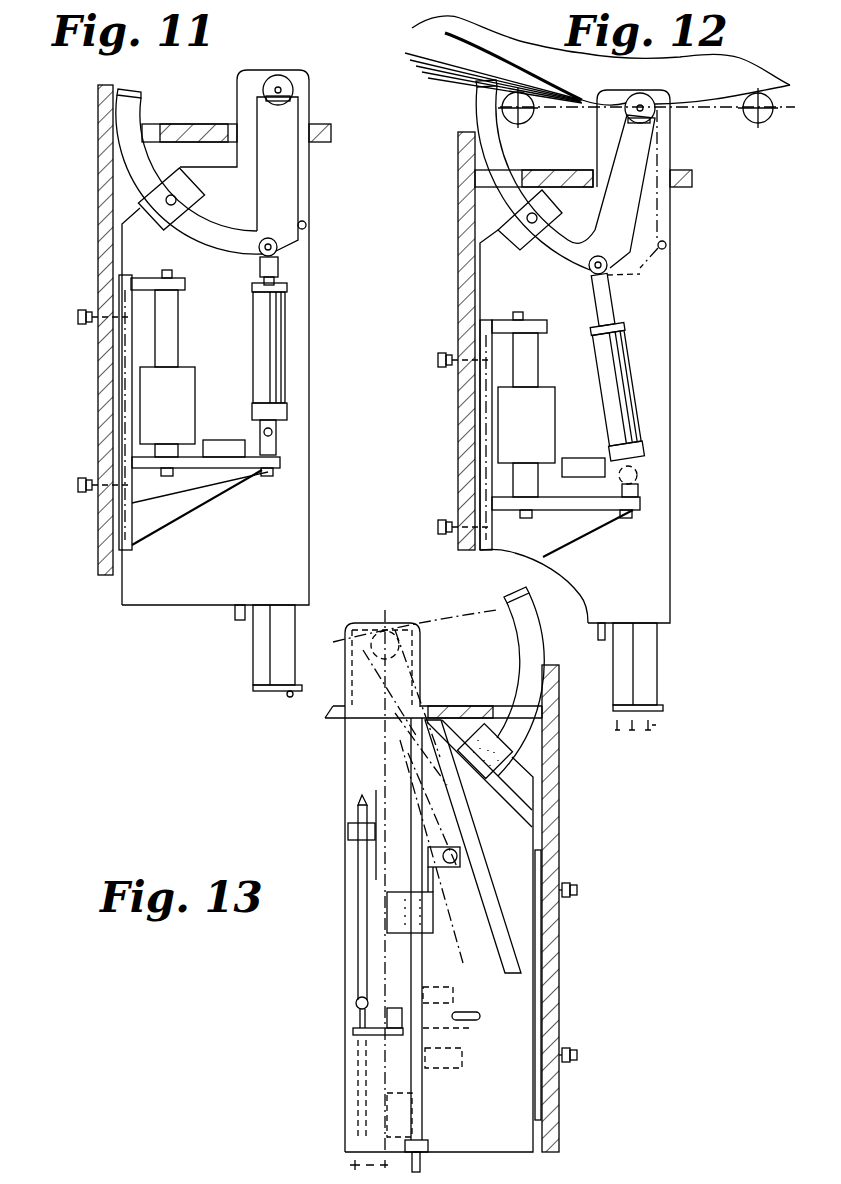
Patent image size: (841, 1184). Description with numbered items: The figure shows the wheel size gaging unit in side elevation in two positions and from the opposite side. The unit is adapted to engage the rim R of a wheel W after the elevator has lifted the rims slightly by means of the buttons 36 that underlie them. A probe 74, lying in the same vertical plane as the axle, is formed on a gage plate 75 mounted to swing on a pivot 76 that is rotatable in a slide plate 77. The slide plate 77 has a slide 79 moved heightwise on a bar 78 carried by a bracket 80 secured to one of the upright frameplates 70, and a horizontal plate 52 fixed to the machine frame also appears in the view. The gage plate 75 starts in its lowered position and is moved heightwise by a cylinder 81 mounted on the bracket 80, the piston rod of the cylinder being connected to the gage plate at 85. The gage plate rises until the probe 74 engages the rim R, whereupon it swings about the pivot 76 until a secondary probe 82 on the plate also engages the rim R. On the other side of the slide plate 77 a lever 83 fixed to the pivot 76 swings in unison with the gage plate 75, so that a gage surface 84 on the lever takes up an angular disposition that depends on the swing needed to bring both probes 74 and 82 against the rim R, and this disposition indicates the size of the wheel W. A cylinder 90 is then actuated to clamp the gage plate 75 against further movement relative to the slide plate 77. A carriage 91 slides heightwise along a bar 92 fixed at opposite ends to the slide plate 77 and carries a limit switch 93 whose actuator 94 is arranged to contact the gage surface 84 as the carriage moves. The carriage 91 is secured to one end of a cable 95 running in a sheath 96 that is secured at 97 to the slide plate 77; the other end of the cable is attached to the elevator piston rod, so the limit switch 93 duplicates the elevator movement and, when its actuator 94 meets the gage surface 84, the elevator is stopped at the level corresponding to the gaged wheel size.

In FIG. 12, the buttons 36 is at (533, 118).
In FIG. 11, the horizontal plate 52 is at (322, 125).
In FIG. 12, the horizontal plate 52 is at (690, 190).
In FIG. 13, the horizontal plate 52 is at (333, 719).
In FIG. 11, the upright frameplate 70 is at (108, 580).
In FIG. 12, the upright frameplate 70 is at (457, 190).
In FIG. 13, the upright frameplate 70 is at (559, 983).
In FIG. 11, the probe 74 is at (280, 96).
In FIG. 12, the probe 74 is at (639, 100).
In FIG. 13, the probe 74 is at (390, 624).
In FIG. 11, the gage plate 75 is at (287, 160).
In FIG. 12, the gage plate 75 is at (645, 152).
In FIG. 13, the gage plate 75 is at (520, 642).
In FIG. 11, the pivot 76 is at (266, 80).
In FIG. 12, the pivot 76 is at (651, 95).
In FIG. 11, the slide plate 77 is at (310, 283).
In FIG. 12, the slide plate 77 is at (662, 332).
In FIG. 13, the slide plate 77 is at (518, 1111).
In FIG. 11, the bar 78 is at (177, 316).
In FIG. 12, the bar 78 is at (531, 360).
In FIG. 11, the slide 79 is at (190, 389).
In FIG. 12, the slide 79 is at (546, 432).
In FIG. 11, the bracket 80 is at (222, 467).
In FIG. 12, the bracket 80 is at (597, 511).
In FIG. 11, the cylinder 81 is at (273, 360).
In FIG. 12, the cylinder 81 is at (633, 392).
In FIG. 11, the secondary probe 82 is at (122, 91).
In FIG. 12, the secondary probe 82 is at (477, 80).
In FIG. 13, the secondary probe 82 is at (520, 592).
In FIG. 13, the lever 83 is at (468, 844).
In FIG. 13, the gage surface 84 is at (470, 908).
In FIG. 11, the piston rod connection 85 is at (279, 248).
In FIG. 12, the piston rod connection 85 is at (608, 268).
In FIG. 11, the cylinder 90 is at (165, 232).
In FIG. 12, the cylinder 90 is at (546, 249).
In FIG. 13, the carriage 91 is at (386, 918).
In FIG. 13, the bar 92 is at (424, 1086).
In FIG. 13, the limit switch 93 is at (433, 917).
In FIG. 13, the actuator 94 is at (446, 850).
In FIG. 13, the cable 95 is at (353, 1030).
In FIG. 13, the sheath 96 is at (358, 866).
In FIG. 13, the sheath securing point 97 is at (348, 833).
In FIG. 12, the rim R is at (420, 56).
In FIG. 13, the rim R is at (452, 637).
In FIG. 12, the wheel W is at (531, 53).